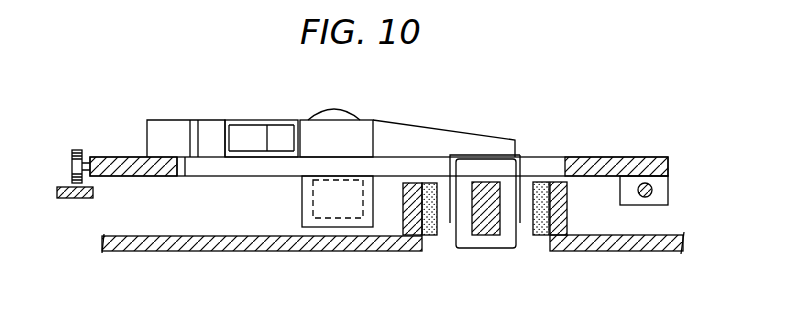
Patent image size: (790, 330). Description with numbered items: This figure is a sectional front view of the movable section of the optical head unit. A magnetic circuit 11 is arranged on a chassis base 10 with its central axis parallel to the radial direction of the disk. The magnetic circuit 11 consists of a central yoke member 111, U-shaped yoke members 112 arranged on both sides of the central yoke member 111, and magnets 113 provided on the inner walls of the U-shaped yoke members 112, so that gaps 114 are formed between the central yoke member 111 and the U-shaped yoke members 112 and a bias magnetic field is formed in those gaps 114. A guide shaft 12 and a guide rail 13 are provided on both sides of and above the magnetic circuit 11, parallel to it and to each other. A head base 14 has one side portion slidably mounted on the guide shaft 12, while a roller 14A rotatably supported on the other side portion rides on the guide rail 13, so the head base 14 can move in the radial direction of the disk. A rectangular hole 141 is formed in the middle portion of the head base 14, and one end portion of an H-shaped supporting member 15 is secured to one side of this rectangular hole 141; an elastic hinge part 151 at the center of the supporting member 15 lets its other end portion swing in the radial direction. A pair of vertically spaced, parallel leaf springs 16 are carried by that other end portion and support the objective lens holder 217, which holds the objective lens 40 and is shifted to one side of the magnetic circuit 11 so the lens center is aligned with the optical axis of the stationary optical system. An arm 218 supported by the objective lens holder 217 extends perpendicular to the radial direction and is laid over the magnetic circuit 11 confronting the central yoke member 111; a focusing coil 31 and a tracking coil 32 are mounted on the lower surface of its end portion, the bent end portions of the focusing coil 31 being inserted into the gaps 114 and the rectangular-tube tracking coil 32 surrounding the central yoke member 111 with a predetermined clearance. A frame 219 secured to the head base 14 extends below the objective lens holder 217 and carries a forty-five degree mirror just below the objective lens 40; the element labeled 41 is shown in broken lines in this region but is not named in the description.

The chassis base 10 is at (653, 241).
The magnetic circuit 11 is at (567, 223).
The guide shaft 12 is at (647, 184).
The guide rail 13 is at (72, 196).
The head base 14 is at (136, 170).
The roller 14A is at (75, 160).
The rectangular hole 141 is at (187, 167).
The supporting member 15 is at (158, 125).
The elastic hinge part 151 is at (188, 125).
The leaf springs 16 is at (262, 123).
The objective lens 40 is at (333, 112).
The hidden member 41 is at (328, 210).
The objective lens holder 217 is at (362, 125).
The arm 218 is at (455, 140).
The frame 219 is at (363, 220).
The focusing coil 31 is at (517, 186).
The tracking coil 32 is at (531, 178).
The central yoke member 111 is at (490, 226).
The U-shaped yoke members 112 is at (412, 222).
The magnets 113 is at (428, 218).
The gaps 114 is at (443, 223).